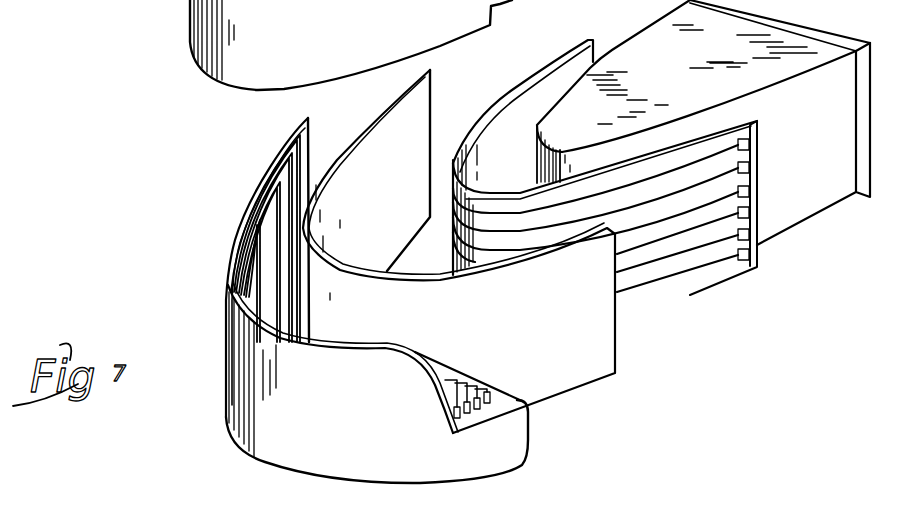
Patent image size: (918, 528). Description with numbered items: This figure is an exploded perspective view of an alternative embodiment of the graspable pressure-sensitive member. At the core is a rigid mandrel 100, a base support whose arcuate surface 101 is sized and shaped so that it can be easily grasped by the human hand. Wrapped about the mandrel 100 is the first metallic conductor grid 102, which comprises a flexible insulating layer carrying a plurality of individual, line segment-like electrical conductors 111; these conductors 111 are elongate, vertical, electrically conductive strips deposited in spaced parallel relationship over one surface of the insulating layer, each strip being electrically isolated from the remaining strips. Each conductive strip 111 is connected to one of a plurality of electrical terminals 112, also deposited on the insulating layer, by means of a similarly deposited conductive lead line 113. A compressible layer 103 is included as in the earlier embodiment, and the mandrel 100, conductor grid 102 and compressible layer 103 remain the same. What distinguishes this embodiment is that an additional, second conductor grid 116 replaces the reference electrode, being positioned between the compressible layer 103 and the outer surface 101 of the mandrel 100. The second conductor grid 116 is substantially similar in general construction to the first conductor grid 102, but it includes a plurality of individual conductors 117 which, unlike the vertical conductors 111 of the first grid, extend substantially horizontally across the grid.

The mandrel 100 is at (788, 44).
The arcuate surface 101 is at (821, 188).
The conductor grid 102 is at (236, 213).
The compressible layer 103 is at (333, 147).
The electrical conductors 111 is at (280, 240).
The electrical terminals 112 is at (463, 427).
The conductive lead line 113 is at (453, 373).
The second conductor grid 116 is at (470, 126).
The conductors 117 is at (707, 227).